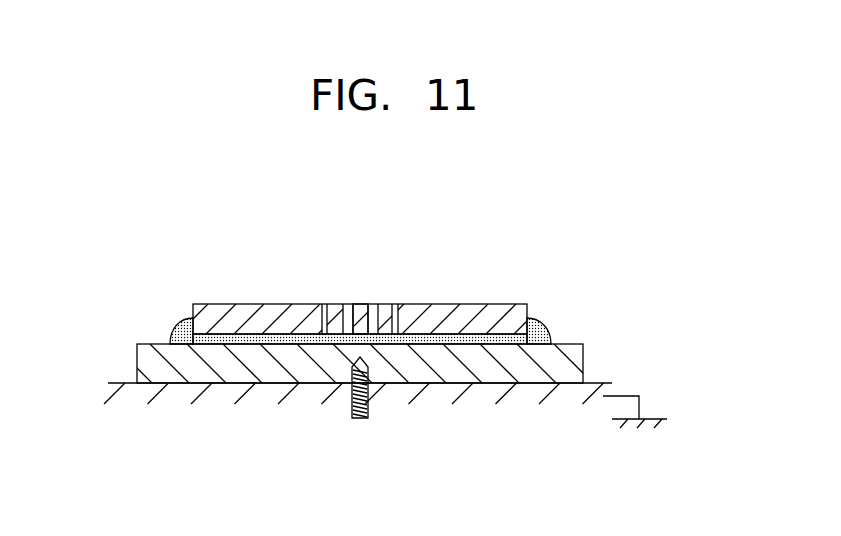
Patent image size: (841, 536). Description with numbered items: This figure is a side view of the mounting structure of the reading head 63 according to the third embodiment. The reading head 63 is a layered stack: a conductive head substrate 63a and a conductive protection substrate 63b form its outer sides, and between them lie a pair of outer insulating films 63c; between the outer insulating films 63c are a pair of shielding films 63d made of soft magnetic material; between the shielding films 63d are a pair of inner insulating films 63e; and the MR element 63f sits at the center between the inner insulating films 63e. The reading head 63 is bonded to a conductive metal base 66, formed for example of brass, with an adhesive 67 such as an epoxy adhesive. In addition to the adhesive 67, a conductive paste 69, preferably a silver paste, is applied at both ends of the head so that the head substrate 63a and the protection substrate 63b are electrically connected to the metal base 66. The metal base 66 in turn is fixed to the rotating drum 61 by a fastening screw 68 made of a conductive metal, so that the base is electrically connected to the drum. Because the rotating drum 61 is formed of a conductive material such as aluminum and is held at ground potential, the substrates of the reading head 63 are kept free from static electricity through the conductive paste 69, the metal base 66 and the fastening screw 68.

The rotating drum 61 is at (133, 382).
The reading head 63 is at (571, 214).
The head substrate 63a is at (513, 303).
The protection substrate 63b is at (203, 303).
The outer insulating films 63c is at (325, 303).
The shielding films 63d is at (335, 303).
The inner insulating films 63e is at (348, 303).
The MR element 63f is at (360, 303).
The metal base 66 is at (583, 352).
The adhesive 67 is at (217, 348).
The fastening screw 68 is at (370, 410).
The conductive paste 69 is at (176, 327).